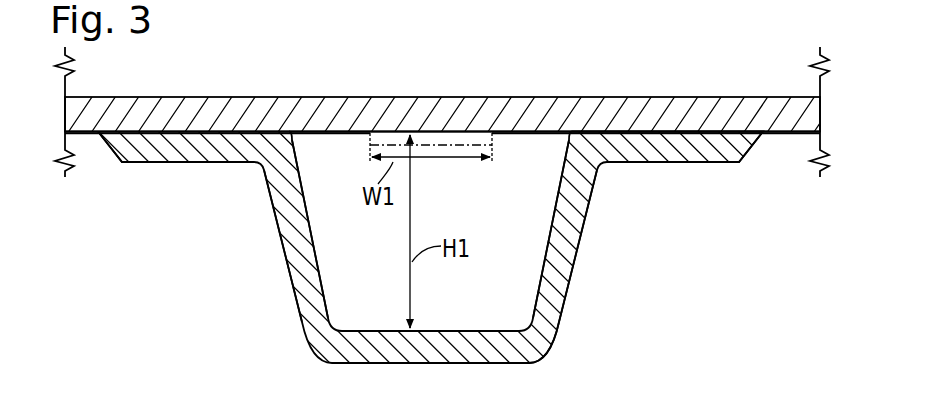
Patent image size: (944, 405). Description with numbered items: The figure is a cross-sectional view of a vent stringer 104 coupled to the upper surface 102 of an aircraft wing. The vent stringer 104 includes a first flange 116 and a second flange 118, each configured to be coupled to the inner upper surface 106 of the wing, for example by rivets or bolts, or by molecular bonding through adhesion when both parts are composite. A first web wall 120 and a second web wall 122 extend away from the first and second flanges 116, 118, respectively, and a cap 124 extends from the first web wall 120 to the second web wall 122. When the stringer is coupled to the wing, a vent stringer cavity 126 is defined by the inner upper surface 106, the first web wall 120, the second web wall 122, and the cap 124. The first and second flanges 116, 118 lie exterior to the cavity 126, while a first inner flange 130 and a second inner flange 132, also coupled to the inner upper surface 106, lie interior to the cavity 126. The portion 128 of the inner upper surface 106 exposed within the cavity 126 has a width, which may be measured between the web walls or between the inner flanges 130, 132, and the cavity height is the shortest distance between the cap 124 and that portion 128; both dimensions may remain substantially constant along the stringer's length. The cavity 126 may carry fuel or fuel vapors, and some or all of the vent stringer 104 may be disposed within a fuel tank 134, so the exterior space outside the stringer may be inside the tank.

The upper surface 102 is at (622, 96).
The vent stringer 104 is at (702, 289).
The inner upper surface 106 is at (795, 135).
The first flange 116 is at (190, 158).
The second flange 118 is at (680, 158).
The first web wall 120 is at (298, 268).
The second web wall 122 is at (575, 222).
The cap 124 is at (437, 347).
The vent stringer cavity 126 is at (541, 304).
The portion of the upper inner surface 128 is at (432, 135).
The first inner flange 130 is at (340, 133).
The second inner flange 132 is at (530, 133).
The fuel tank 134 is at (187, 302).